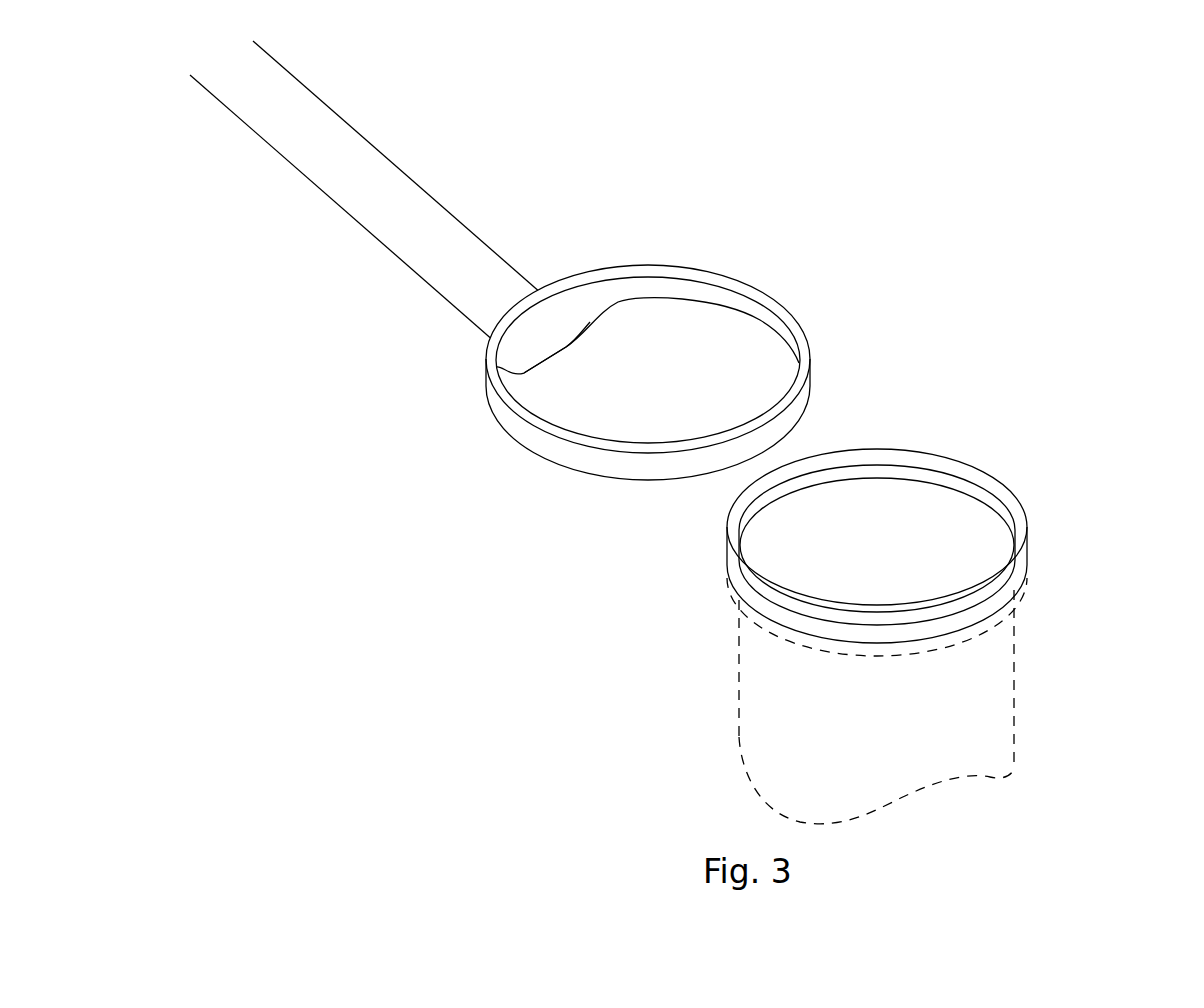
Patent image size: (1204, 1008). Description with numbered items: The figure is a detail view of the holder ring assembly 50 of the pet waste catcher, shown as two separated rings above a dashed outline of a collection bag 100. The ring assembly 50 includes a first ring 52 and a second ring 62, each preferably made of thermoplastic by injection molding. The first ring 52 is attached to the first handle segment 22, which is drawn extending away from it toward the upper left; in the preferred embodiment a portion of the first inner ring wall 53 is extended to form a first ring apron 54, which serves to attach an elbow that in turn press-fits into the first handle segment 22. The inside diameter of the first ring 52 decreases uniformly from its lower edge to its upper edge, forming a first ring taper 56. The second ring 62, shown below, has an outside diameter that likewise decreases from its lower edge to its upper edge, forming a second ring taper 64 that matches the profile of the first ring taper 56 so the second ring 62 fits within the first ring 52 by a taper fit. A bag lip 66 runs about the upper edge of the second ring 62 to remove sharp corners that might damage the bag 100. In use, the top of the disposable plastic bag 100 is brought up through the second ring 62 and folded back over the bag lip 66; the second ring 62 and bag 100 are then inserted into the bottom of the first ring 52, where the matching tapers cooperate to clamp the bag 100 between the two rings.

The first handle segment 22 is at (388, 202).
The holder ring assembly 50 is at (787, 435).
The first ring 52 is at (502, 425).
The first inner ring wall 53 is at (687, 288).
The first ring apron 54 is at (565, 347).
The first ring taper 56 is at (753, 313).
The second ring 62 is at (750, 583).
The second ring taper 64 is at (1007, 588).
The bag lip 66 is at (1012, 503).
The collection bag 100 is at (1014, 737).